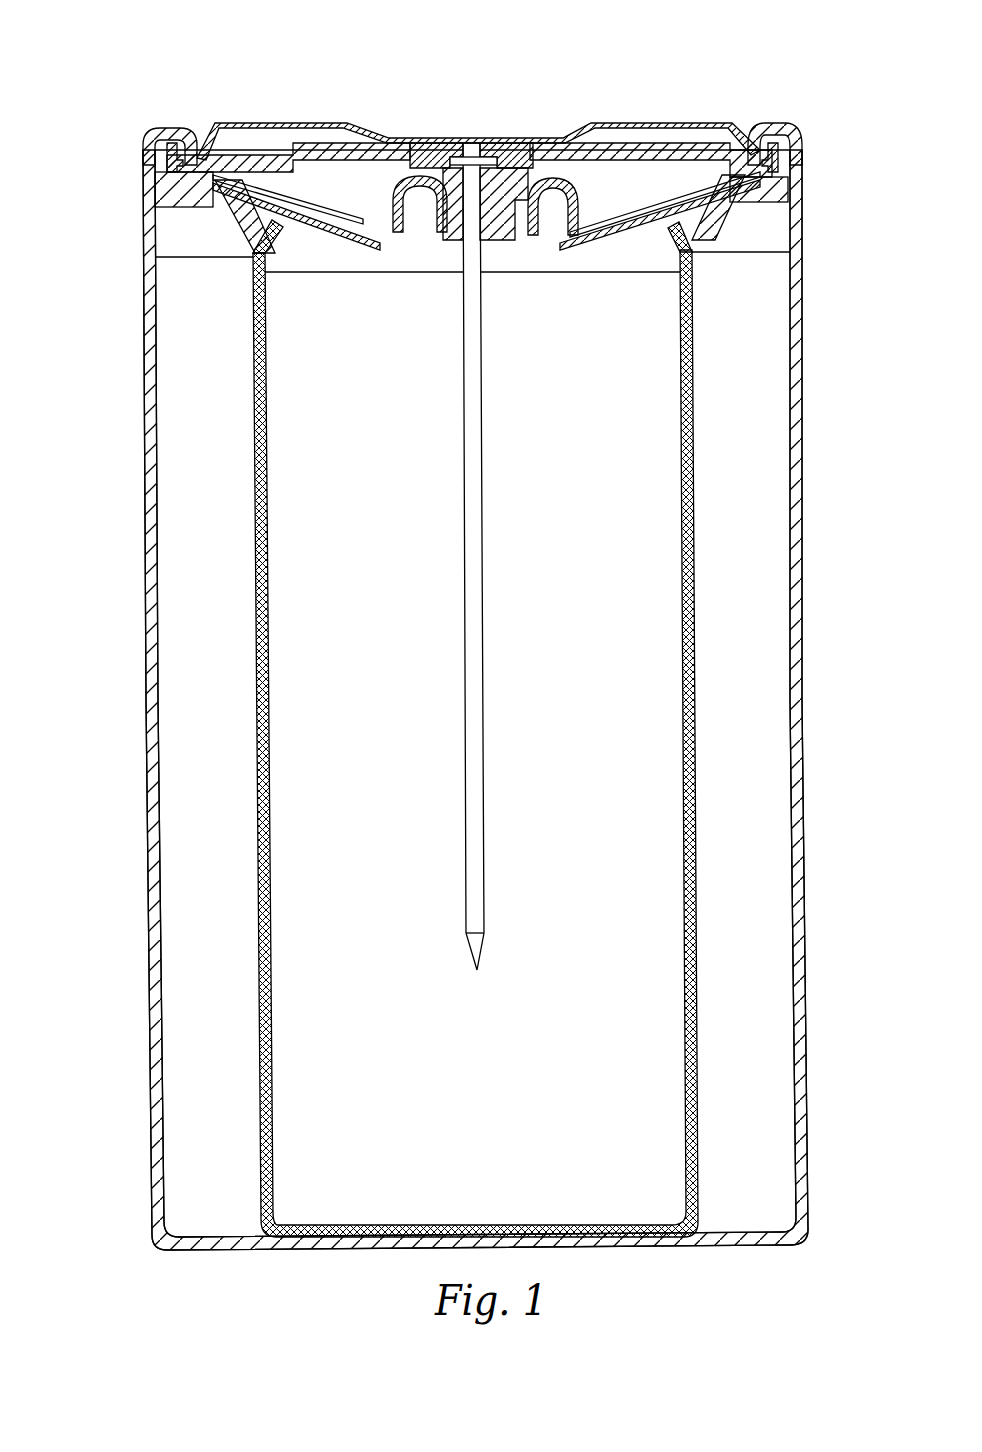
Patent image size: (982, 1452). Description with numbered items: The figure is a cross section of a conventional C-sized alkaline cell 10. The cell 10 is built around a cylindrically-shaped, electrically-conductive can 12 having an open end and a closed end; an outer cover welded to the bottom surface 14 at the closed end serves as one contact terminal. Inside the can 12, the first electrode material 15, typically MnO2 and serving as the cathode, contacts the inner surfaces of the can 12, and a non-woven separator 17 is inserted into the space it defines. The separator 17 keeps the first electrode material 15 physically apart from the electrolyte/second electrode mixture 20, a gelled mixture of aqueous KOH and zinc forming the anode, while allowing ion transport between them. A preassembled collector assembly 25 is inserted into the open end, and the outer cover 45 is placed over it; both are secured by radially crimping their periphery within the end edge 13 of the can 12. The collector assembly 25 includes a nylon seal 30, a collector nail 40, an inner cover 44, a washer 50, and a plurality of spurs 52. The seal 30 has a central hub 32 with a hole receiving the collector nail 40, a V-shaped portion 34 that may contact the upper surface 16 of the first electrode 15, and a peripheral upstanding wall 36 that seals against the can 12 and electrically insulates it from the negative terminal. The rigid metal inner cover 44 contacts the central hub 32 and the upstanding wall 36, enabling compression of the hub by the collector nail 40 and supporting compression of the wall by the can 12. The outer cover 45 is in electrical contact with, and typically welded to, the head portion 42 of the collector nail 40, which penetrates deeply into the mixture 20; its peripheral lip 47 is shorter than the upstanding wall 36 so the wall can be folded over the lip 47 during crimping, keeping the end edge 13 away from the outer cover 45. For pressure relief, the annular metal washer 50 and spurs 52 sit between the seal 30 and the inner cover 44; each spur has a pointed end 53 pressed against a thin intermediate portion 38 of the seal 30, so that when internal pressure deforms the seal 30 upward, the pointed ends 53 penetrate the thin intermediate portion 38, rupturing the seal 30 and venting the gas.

The alkaline cell 10 is at (491, 48).
The can 12 is at (476, 726).
The end edge of can 13 is at (186, 150).
The bottom surface 14 is at (715, 1247).
The first electrode material 15 is at (185, 540).
The upper surface of first electrode 16 is at (172, 243).
The separator 17 is at (693, 613).
The electrolyte/second electrode mixture 20 is at (610, 713).
The collector assembly 25 is at (446, 212).
The seal 30 is at (178, 203).
The central hub 32 is at (453, 225).
The V-shaped portion 34 is at (232, 252).
The peripheral upstanding wall 36 is at (147, 134).
The thin intermediate portion 38 is at (560, 233).
The collector nail 40 is at (485, 802).
The head portion 42 is at (480, 140).
The inner cover 44 is at (337, 132).
The outer cover 45 is at (262, 127).
The peripheral lip 47 is at (806, 140).
The washer 50 is at (653, 200).
The spurs 52 is at (583, 180).
The pointed end 53 is at (556, 234).